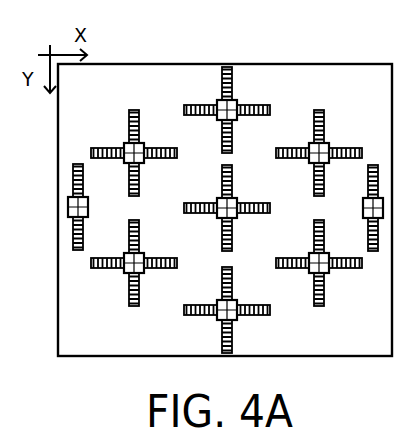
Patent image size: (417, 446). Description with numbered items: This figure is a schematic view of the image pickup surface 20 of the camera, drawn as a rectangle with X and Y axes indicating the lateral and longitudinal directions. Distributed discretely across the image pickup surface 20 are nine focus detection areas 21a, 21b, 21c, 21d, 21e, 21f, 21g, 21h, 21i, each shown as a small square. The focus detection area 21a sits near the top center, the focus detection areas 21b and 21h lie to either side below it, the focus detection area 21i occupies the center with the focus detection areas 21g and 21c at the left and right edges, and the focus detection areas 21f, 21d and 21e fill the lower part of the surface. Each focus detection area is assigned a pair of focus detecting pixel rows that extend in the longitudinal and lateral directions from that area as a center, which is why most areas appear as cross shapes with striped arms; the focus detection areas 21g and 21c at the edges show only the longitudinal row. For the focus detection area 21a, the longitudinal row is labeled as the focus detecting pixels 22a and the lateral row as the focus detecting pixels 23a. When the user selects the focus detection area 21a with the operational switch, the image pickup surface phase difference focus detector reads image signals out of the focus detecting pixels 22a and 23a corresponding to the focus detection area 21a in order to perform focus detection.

The substrate 20 is at (380, 77).
The focus detection area 21a is at (251, 92).
The focus detection area 21b is at (330, 145).
The focus detection area 21c is at (383, 217).
The focus detection area 21d is at (330, 273).
The focus detection area 21e is at (238, 318).
The focus detection area 21f is at (123, 272).
The focus detection area 21g is at (68, 206).
The focus detection area 21h is at (123, 143).
The focus detection area 21i is at (215, 218).
The focus detecting pixels 22a is at (231, 80).
The focus detecting pixels 23a is at (271, 108).